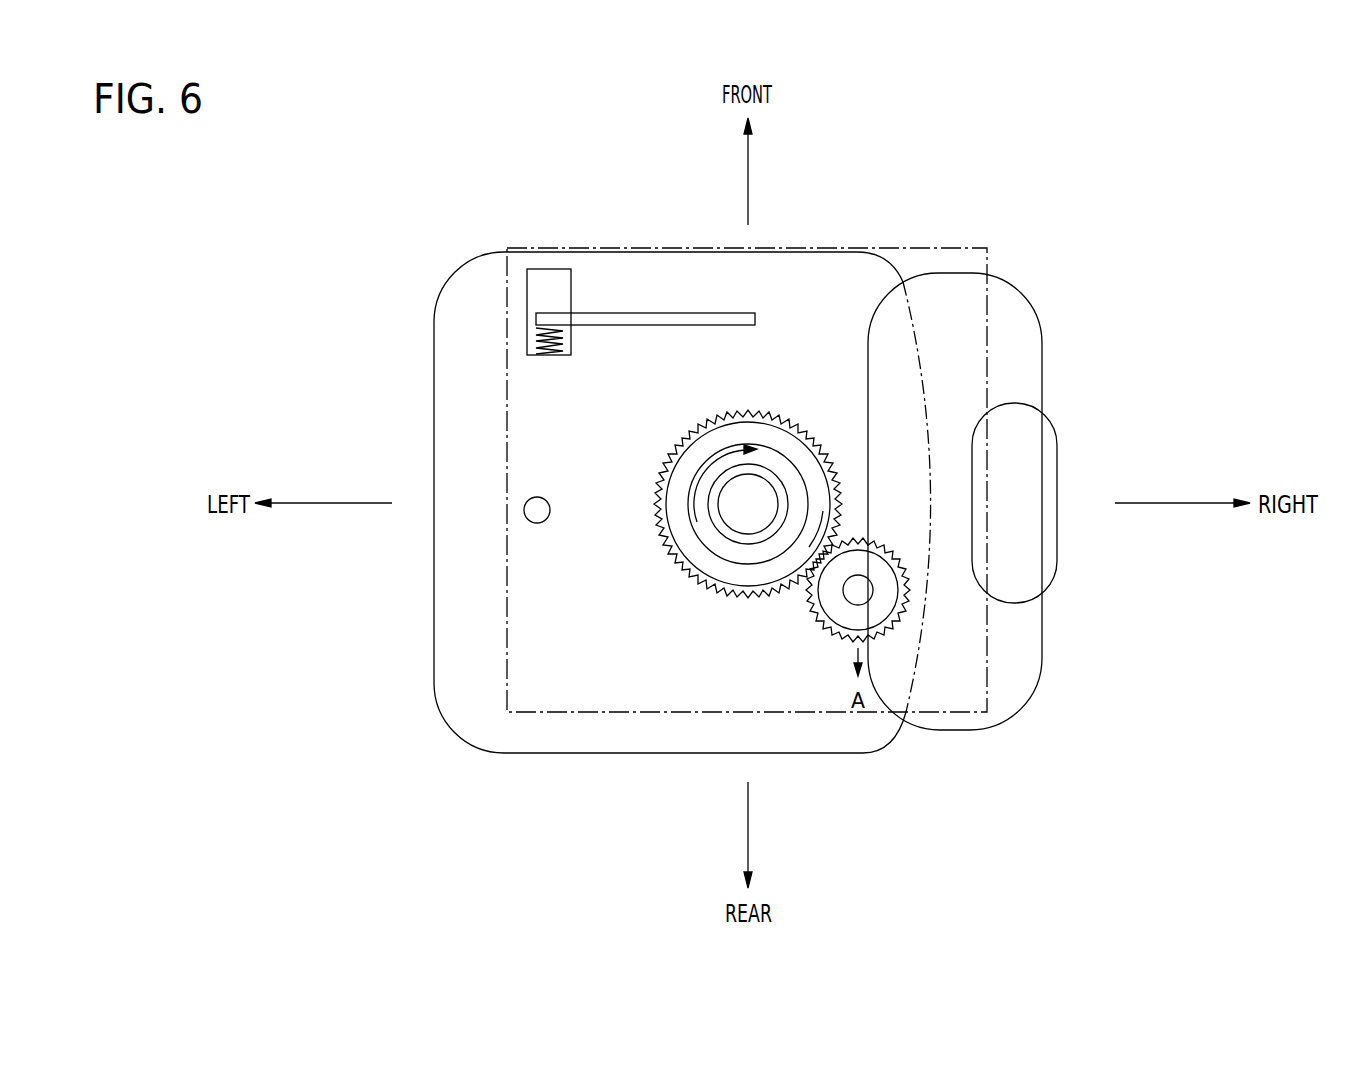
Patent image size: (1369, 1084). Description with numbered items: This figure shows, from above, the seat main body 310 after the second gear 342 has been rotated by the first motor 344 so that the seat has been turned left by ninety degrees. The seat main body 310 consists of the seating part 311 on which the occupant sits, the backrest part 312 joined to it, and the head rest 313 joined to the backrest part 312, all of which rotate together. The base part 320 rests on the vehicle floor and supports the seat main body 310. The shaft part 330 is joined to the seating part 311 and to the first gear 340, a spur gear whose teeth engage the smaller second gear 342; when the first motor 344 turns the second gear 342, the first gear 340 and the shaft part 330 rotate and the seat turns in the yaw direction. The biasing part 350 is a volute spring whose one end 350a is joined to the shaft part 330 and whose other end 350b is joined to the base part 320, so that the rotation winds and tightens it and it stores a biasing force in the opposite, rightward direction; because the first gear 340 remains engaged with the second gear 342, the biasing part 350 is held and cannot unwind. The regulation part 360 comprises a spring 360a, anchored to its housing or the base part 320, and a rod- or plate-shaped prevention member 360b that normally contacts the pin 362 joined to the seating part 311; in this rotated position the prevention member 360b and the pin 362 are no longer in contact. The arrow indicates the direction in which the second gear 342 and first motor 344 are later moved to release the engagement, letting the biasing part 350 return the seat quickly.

The seat main body 310 is at (1086, 325).
The seating part 311 is at (476, 263).
The backrest part 312 is at (1003, 283).
The head rest 313 is at (1060, 547).
The base part 320 is at (922, 248).
The shaft part 330 is at (732, 512).
The first gear 340 is at (768, 412).
The second gear 342 is at (832, 632).
The first motor 344 is at (555, 625).
The biasing part 350 is at (710, 447).
The one end of the biasing part 350a is at (713, 476).
The other end of the biasing part 350b is at (818, 530).
The regulation part 360 is at (527, 297).
The spring 360a is at (527, 343).
The prevention member 360b is at (657, 313).
The pin 362 is at (545, 495).